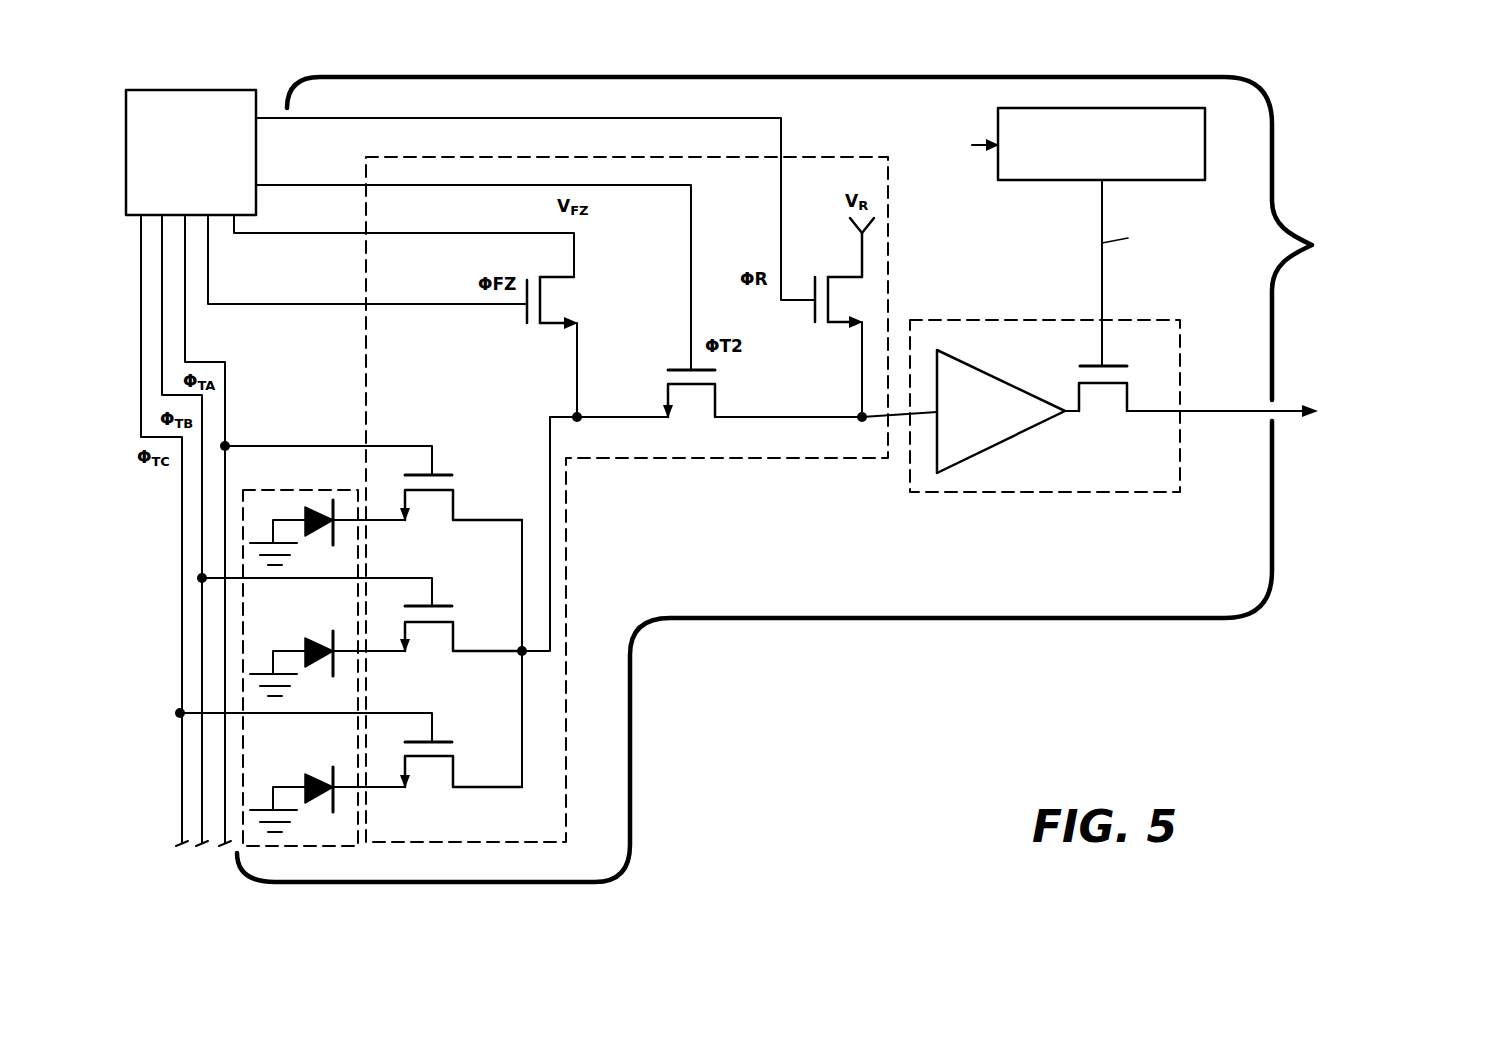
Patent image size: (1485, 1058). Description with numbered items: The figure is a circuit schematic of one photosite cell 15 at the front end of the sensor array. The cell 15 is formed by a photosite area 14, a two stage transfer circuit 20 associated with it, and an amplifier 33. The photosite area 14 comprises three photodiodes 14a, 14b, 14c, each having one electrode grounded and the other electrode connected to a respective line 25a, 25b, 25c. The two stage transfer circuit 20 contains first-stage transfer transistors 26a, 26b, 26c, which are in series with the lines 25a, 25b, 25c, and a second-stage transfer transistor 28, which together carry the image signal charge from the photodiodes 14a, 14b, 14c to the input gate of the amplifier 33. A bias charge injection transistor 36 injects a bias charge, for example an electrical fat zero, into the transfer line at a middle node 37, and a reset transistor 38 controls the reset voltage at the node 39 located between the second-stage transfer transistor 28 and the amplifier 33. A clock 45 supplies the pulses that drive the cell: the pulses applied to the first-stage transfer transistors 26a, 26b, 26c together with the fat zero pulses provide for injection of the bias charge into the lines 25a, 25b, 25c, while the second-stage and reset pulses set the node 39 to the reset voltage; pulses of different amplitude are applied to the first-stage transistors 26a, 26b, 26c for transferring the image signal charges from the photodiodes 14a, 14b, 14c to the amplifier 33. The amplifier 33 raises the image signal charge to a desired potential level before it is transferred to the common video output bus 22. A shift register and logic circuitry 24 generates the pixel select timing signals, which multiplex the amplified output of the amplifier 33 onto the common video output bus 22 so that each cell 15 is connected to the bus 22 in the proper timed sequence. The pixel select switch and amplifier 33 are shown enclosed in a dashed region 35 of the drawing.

The photosite cell 15 is at (1290, 82).
The clock 45 is at (218, 88).
The shift register and logic circuitry 24 is at (1041, 165).
The reset transistor 38 is at (862, 293).
The bias charge injection transistor 36 is at (587, 304).
The second-stage transfer transistor 28 is at (692, 422).
The middle node 37 is at (586, 420).
The node 39 is at (862, 421).
The pixel select circuit 35 is at (1176, 310).
The amplifier 33 is at (1085, 495).
The common video output line or bus 22 is at (1210, 411).
The two stage transfer circuit 20 is at (567, 585).
The line 25a is at (373, 520).
The line 25b is at (373, 651).
The line 25c is at (373, 787).
The first-stage transfer transistor 26a is at (423, 514).
The first-stage transfer transistor 26b is at (423, 645).
The first-stage transfer transistor 26c is at (423, 781).
The photosite area 14 is at (240, 750).
The photodiode 14a is at (316, 533).
The photodiode 14b is at (316, 666).
The photodiode 14c is at (304, 788).